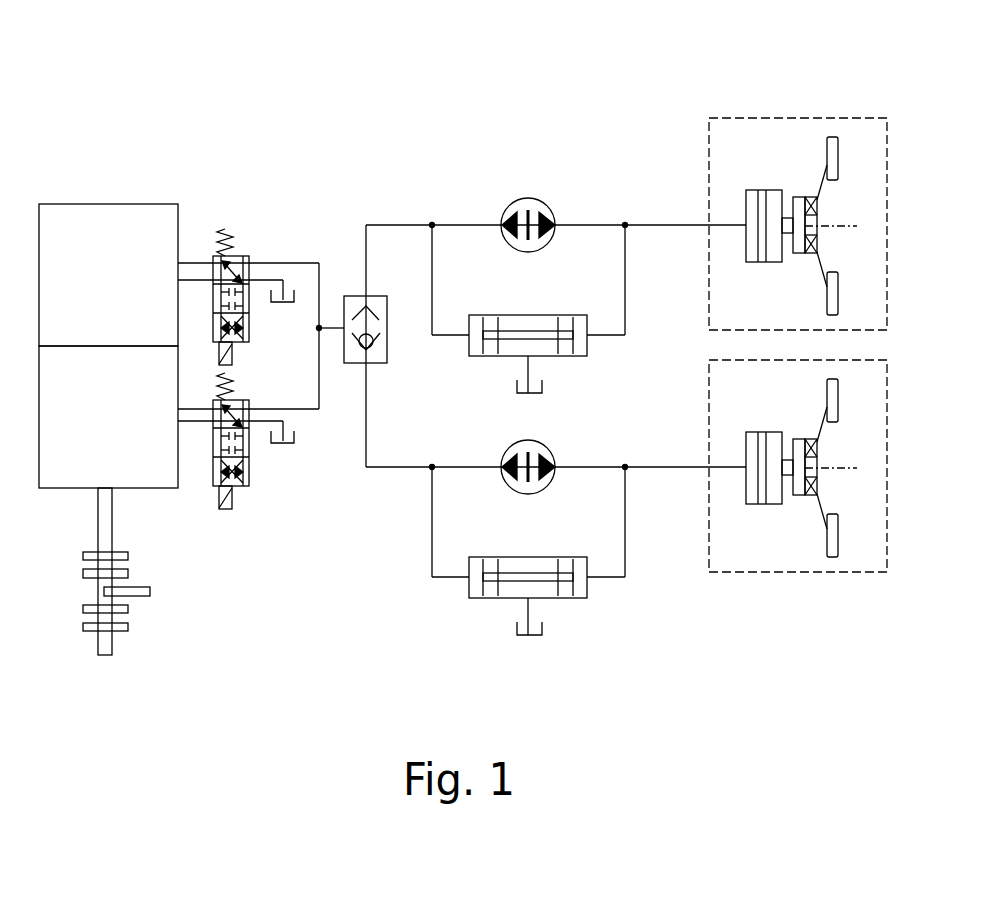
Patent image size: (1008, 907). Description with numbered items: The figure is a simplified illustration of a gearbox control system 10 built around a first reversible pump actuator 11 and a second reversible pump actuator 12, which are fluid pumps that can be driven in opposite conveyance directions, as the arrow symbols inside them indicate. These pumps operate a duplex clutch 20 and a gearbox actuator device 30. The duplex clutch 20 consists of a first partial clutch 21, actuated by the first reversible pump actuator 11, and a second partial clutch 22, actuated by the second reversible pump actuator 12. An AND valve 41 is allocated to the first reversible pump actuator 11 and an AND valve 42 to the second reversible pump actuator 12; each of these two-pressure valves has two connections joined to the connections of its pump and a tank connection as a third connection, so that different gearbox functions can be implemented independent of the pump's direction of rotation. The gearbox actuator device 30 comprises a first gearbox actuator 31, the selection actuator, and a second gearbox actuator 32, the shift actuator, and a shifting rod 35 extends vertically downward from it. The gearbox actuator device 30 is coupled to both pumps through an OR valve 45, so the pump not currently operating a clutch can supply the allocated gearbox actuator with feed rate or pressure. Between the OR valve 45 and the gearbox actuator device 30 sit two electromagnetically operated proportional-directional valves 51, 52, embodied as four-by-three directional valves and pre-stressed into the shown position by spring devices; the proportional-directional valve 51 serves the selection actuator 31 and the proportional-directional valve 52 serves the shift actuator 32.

The gearbox control system 10 is at (537, 85).
The first reversible pump actuator 11 is at (522, 197).
The second reversible pump actuator 12 is at (502, 452).
The duplex clutch 20 is at (798, 177).
The first partial clutch 21 is at (850, 117).
The second partial clutch 22 is at (805, 574).
The gearbox actuator device 30 is at (108, 310).
The first gearbox actuator 31 is at (125, 433).
The second gearbox actuator 32 is at (125, 288).
The shifting rod 35 is at (107, 656).
The AND valve 41 is at (582, 357).
The AND valve 42 is at (590, 597).
The OR valve 45 is at (355, 365).
The proportional-directional valve 51 is at (247, 507).
The proportional-directional valve 52 is at (244, 230).